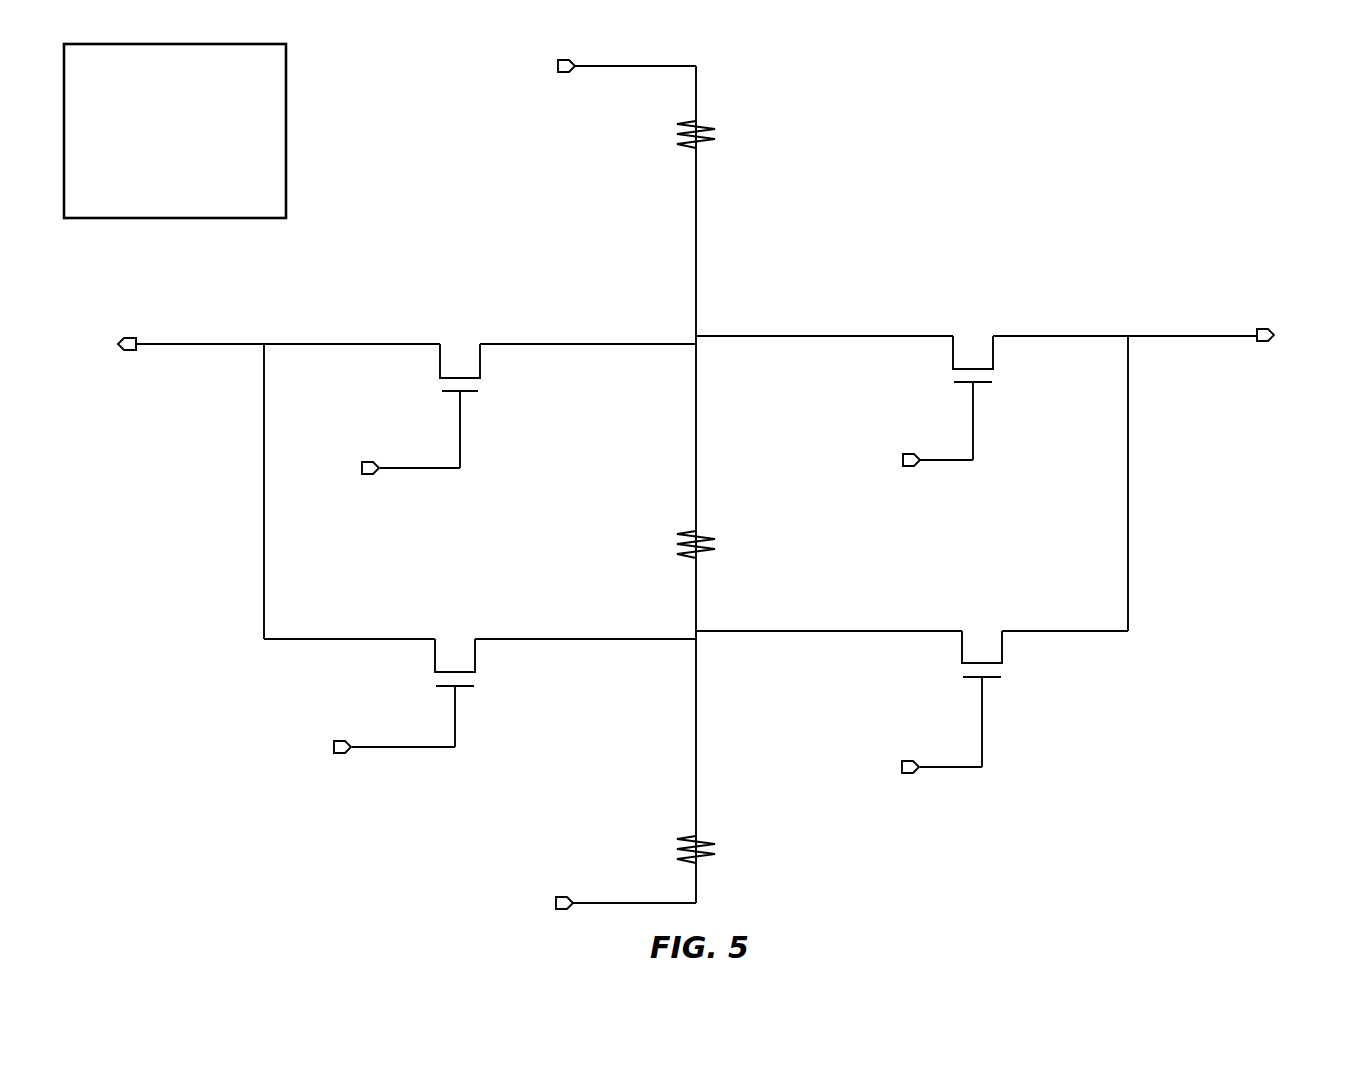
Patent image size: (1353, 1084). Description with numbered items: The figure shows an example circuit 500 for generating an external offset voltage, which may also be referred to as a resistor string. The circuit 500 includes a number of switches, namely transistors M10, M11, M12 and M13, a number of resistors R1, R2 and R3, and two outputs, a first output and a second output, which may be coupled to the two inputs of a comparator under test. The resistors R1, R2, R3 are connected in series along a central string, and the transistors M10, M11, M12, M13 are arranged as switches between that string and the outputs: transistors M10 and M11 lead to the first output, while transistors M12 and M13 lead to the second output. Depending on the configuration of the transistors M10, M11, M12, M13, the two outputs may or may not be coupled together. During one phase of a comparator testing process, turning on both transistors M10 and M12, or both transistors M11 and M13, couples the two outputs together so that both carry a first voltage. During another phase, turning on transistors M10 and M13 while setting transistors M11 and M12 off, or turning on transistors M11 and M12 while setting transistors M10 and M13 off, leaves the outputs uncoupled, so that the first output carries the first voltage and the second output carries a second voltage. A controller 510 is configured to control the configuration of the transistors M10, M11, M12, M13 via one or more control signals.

The circuit 500 is at (1247, 96).
The controller 510 is at (190, 157).
The resistor R1 is at (720, 136).
The resistor R2 is at (719, 546).
The resistor R3 is at (719, 851).
The transistor M10 is at (422, 396).
The transistor M11 is at (406, 683).
The transistor M12 is at (949, 388).
The transistor M13 is at (953, 688).